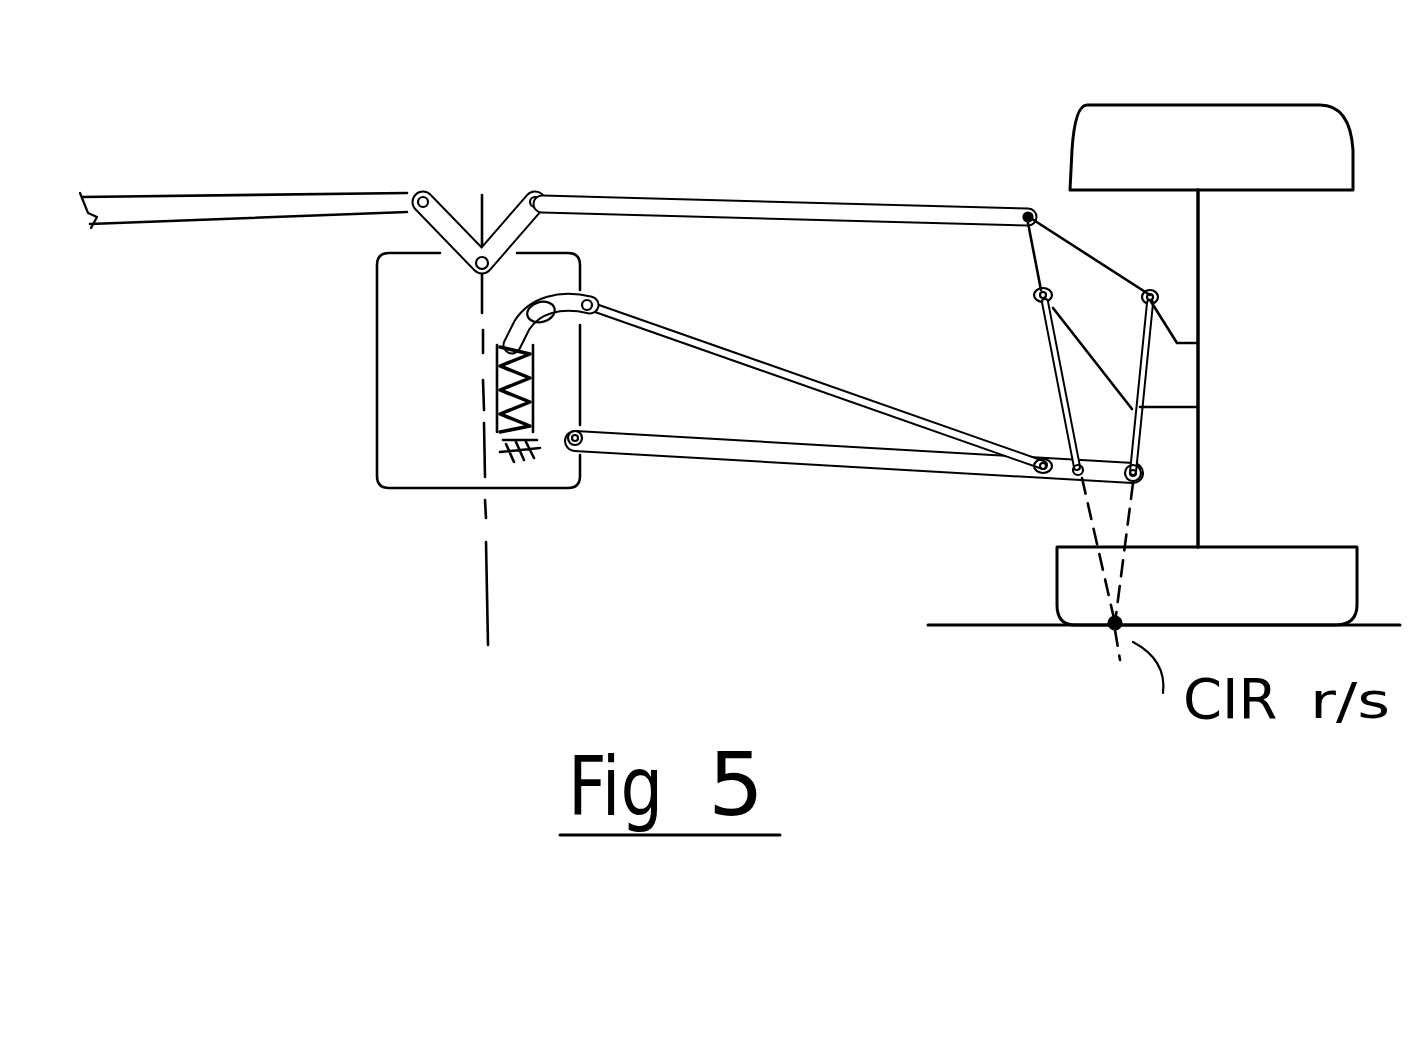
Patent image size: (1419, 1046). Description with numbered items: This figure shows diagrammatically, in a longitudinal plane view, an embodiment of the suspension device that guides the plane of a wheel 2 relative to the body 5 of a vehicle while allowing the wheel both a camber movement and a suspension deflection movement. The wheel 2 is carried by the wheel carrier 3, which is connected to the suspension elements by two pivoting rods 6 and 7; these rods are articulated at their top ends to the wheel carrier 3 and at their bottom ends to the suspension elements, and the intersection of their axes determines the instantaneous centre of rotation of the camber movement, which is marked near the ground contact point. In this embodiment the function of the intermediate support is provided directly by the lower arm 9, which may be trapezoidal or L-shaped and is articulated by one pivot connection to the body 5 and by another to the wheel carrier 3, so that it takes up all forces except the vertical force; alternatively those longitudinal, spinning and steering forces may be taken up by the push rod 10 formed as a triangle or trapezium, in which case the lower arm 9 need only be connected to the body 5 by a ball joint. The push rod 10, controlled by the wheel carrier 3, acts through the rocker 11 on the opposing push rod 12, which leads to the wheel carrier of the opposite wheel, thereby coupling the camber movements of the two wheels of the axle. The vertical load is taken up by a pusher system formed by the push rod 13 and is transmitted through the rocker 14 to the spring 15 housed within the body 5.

The wheel 2 is at (1198, 262).
The wheel carrier 3 is at (1050, 240).
The body 5 is at (412, 367).
The pivoting rod 6 is at (1143, 449).
The pivoting rod 7 is at (1057, 396).
The lower arm 9 is at (648, 443).
The push rod 10 is at (827, 203).
The rocker 11 is at (447, 223).
The opposing push rod 12 is at (275, 195).
The push rod 13 is at (768, 368).
The rocker 14 is at (604, 266).
The spring 15 is at (537, 390).